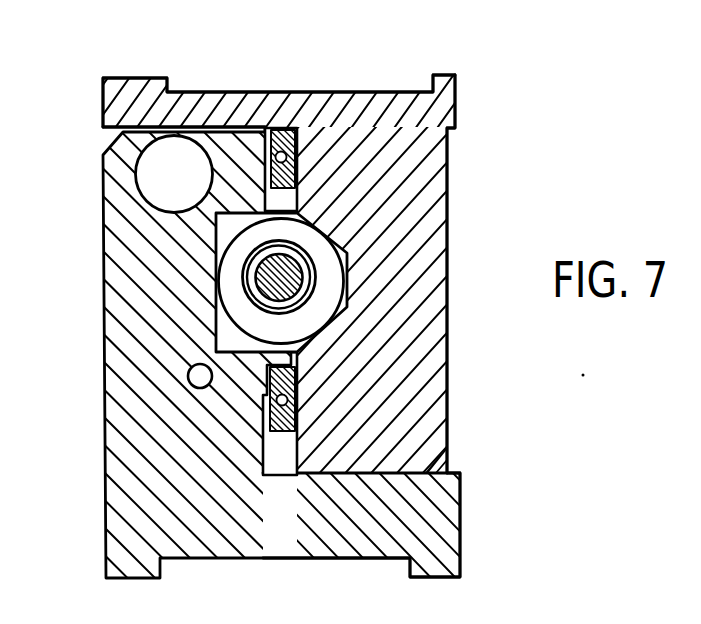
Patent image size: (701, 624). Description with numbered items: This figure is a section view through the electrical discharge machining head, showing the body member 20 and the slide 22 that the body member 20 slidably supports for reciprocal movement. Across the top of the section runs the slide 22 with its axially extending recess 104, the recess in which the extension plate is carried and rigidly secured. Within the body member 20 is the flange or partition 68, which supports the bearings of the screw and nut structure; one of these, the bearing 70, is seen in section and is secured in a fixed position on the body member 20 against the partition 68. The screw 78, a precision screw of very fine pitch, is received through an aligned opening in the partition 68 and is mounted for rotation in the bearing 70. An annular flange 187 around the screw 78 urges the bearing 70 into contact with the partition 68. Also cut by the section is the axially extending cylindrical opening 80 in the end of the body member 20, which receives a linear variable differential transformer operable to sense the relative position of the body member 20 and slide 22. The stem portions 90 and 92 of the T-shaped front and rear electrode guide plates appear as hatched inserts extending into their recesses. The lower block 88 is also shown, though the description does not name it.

The body member 20 is at (105, 488).
The slide 22 is at (449, 160).
The axially extending recess 104 is at (184, 90).
The bottom block 88 is at (452, 447).
The axially extending cylindrical opening 80 is at (136, 174).
The stem portion 90 is at (283, 133).
The stem portion 92 is at (283, 437).
The bearing 70 is at (327, 216).
The flange or partition 68 is at (321, 330).
The annular flange 187 is at (307, 299).
The screw 78 is at (302, 268).